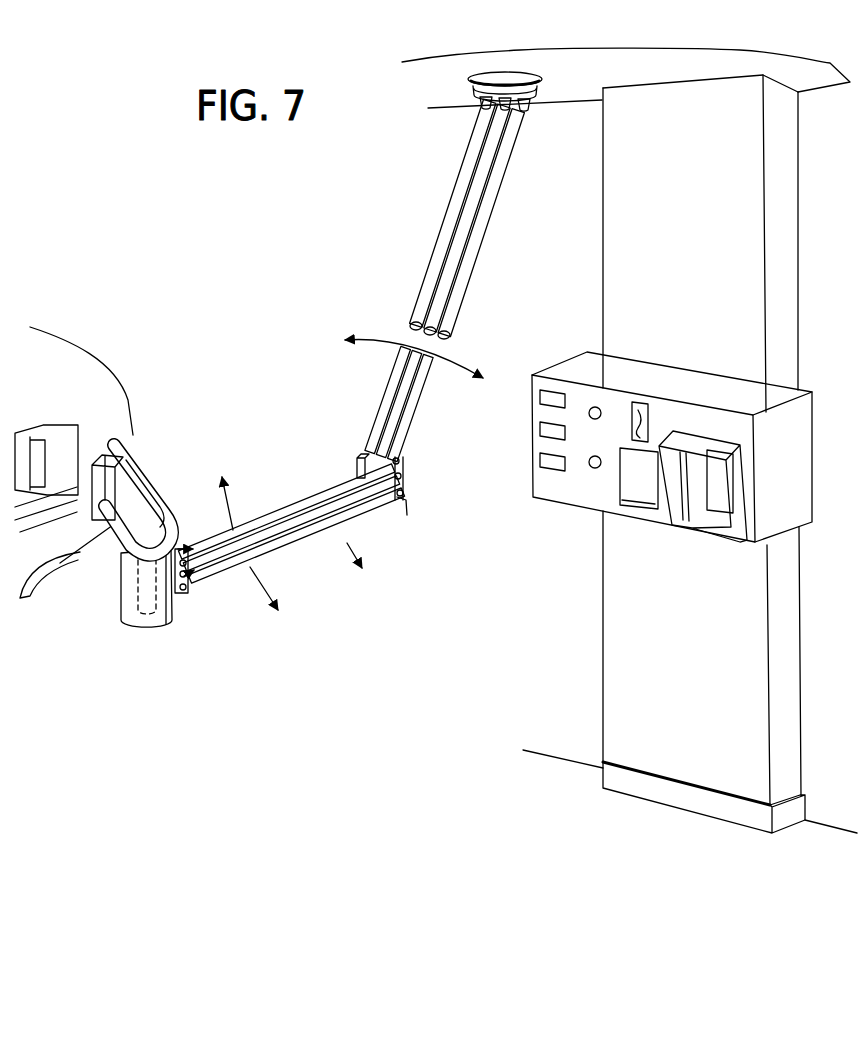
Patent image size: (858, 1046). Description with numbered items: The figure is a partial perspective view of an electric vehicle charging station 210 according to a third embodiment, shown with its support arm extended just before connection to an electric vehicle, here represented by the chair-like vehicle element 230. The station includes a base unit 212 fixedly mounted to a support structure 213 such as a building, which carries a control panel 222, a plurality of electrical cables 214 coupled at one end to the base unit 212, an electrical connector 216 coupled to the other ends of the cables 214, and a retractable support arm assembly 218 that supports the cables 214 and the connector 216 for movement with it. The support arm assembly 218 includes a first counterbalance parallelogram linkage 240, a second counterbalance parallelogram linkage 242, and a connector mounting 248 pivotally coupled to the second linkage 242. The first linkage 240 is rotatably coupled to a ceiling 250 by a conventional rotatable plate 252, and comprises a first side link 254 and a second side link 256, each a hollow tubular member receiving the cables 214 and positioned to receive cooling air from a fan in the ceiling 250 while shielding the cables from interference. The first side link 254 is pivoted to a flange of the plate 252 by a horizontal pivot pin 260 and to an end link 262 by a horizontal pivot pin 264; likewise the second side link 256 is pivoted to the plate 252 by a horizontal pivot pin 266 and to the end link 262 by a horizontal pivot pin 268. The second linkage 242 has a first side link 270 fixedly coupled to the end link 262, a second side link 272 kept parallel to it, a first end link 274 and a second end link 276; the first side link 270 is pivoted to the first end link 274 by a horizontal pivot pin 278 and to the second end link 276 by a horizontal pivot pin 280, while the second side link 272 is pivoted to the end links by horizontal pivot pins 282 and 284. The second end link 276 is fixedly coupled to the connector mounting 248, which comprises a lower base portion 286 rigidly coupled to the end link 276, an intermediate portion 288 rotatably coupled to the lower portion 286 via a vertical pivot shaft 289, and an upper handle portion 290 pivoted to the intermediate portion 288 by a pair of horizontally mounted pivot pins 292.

The electric vehicle charging station 210 is at (360, 215).
The base unit 212 is at (529, 412).
The support structure 213 is at (787, 250).
The electrical cables 214 is at (413, 330).
The electrical connector 216 is at (92, 455).
The retractable support arm assembly 218 is at (313, 378).
The control console 222 is at (663, 383).
The dental chair 230 is at (90, 352).
The first counterbalance parallelogram linkage 240 is at (415, 276).
The second counterbalance parallelogram linkage 242 is at (366, 574).
The connector mounting 248 is at (163, 457).
The ceiling 250 is at (642, 62).
The rotatable plate 252 is at (543, 87).
The first side link 254 is at (443, 230).
The second side link 256 is at (477, 242).
The horizontal pivot pin 260 is at (480, 110).
The end link 262 is at (401, 475).
The horizontal pivot pin 264 is at (375, 462).
The horizontal pivot pin 266 is at (517, 130).
The horizontal pivot pin 268 is at (399, 459).
The first side link 270 is at (307, 485).
The second side link 272 is at (318, 538).
The first end link 274 is at (407, 503).
The second end link 276 is at (193, 580).
The horizontal pivot pin 278 is at (403, 492).
The horizontal pivot pin 280 is at (208, 568).
The horizontal pivot pin 282 is at (404, 502).
The horizontal pivot pin 284 is at (188, 594).
The lower base portion 286 is at (127, 628).
The intermediate portion 288 is at (172, 540).
The vertical pivot shaft 289 is at (135, 585).
The upper handle portion 290 is at (147, 450).
The horizontal pivot pins 292 is at (92, 520).